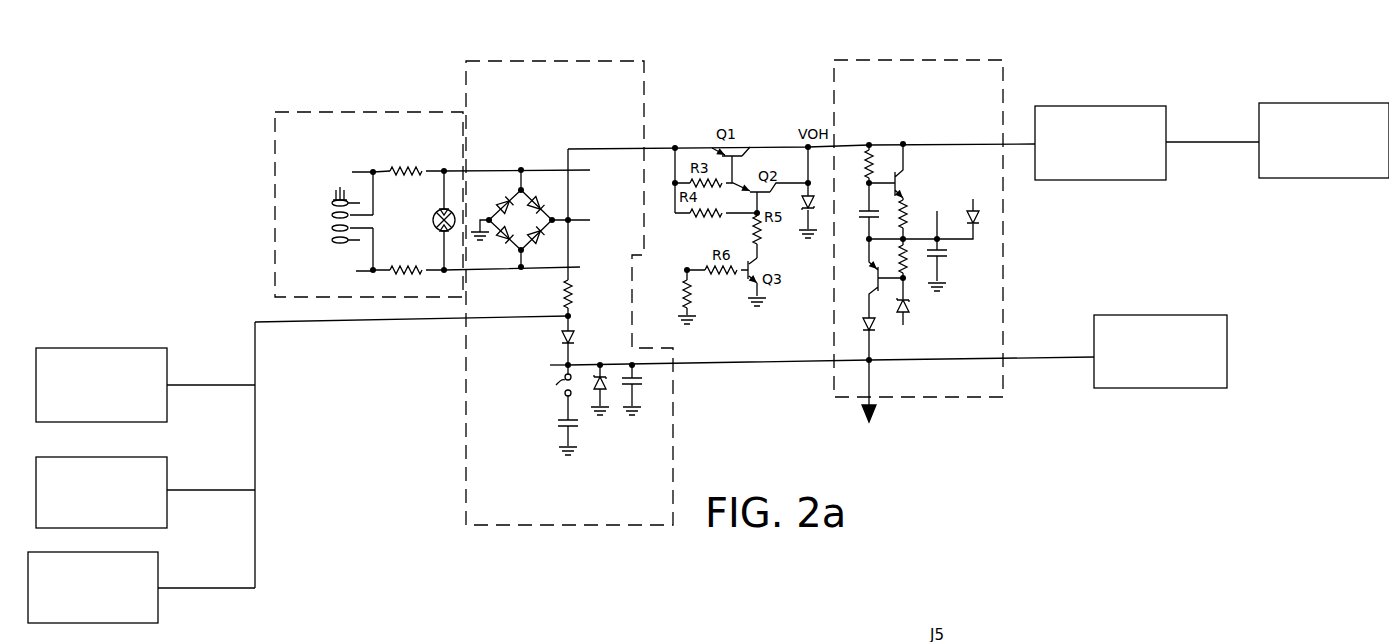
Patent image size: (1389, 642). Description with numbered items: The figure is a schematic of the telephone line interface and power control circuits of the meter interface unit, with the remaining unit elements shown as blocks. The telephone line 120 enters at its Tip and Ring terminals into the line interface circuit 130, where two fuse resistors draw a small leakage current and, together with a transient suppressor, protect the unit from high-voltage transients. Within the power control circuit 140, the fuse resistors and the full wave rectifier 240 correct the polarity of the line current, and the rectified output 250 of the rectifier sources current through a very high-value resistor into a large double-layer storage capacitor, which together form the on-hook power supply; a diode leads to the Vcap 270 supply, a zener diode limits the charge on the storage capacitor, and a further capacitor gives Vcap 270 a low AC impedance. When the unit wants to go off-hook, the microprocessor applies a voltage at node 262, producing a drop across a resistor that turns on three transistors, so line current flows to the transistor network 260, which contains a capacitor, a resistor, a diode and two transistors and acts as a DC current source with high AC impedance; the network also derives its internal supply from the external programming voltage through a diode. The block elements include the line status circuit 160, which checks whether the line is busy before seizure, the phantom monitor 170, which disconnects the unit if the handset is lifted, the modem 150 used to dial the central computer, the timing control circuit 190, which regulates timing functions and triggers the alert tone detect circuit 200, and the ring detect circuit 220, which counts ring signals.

The telephone line 120 is at (308, 172).
The line interface circuit 130 is at (343, 184).
The power control circuit 140 is at (558, 278).
The modem 150 is at (1316, 103).
The line status circuit 160 is at (158, 348).
The phantom monitor 170 is at (1100, 106).
The timing control circuit 190 is at (1172, 315).
The alert tone detect circuit 200 is at (150, 552).
The ring detect circuit 220 is at (158, 457).
The full wave rectifier 240 is at (522, 187).
The rectified output 250 is at (554, 216).
The transistor network 260 is at (895, 60).
The node 262 is at (690, 276).
The Vcap 270 is at (561, 362).